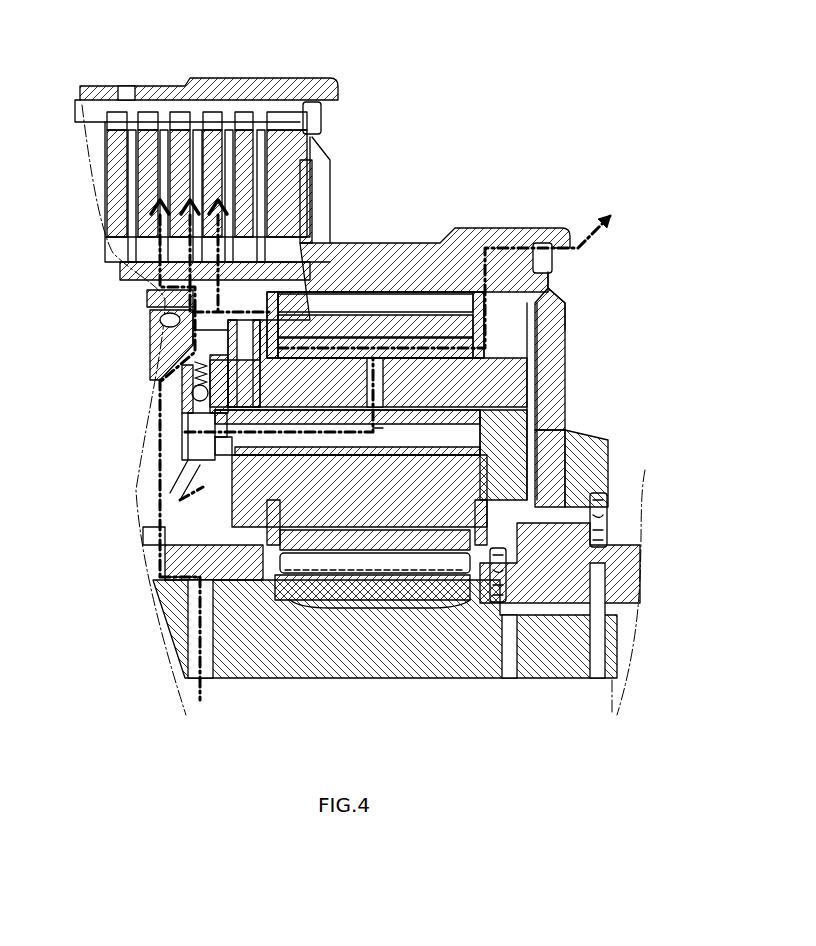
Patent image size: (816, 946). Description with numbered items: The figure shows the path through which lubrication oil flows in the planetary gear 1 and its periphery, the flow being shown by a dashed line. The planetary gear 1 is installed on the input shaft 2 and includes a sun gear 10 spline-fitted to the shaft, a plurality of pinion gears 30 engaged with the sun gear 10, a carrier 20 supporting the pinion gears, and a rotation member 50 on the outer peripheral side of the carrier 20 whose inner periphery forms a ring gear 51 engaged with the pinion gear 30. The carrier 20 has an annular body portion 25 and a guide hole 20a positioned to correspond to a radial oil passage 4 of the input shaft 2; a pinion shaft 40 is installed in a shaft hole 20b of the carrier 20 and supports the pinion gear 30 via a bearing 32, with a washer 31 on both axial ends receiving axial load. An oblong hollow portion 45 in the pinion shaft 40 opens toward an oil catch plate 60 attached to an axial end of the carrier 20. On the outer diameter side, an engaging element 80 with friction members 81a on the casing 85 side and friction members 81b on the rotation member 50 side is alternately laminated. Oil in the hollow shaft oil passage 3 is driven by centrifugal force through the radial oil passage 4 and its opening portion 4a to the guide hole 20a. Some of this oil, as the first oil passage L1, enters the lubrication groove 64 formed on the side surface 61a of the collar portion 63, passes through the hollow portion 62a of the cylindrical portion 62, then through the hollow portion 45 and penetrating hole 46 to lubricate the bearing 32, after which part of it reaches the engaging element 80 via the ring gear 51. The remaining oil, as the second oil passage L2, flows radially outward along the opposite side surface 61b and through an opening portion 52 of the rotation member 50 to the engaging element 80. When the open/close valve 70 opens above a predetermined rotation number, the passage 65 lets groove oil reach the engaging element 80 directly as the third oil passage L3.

The planetary gear 1 is at (580, 198).
The input shaft 2 is at (640, 626).
The shaft oil passage 3 is at (600, 695).
The radial oil passage 4 is at (180, 650).
The opening portion 4a is at (200, 560).
The sun gear 10 is at (260, 590).
The carrier 20 is at (160, 515).
The guide hole 20a is at (165, 545).
The shaft hole 20b is at (550, 368).
The body portion 25 is at (530, 312).
The pinion gear 30 is at (358, 330).
The washer 31 is at (280, 305).
The bearing 32 is at (320, 325).
The pinion shaft 40 is at (540, 395).
The hollow portion 45 is at (548, 428).
The penetrating hole 46 is at (483, 455).
The rotation member 50 is at (418, 243).
The ring gear 51 is at (462, 300).
The opening portion 52 is at (130, 262).
The oil catch plate 60 is at (180, 402).
The side surface 61a is at (217, 333).
The side surface 61b is at (187, 420).
The cylindrical portion 62 is at (320, 432).
The hollow portion 62a is at (197, 452).
The collar portion 63 is at (177, 490).
The lubrication groove 64 is at (182, 467).
The passage 65 is at (200, 353).
The open/close valve 70 is at (188, 373).
The engaging element 80 is at (330, 112).
The friction member 81a is at (185, 130).
The friction member 81b is at (218, 130).
The casing 85 is at (275, 86).
The first oil passage L1 is at (383, 428).
The second oil passage L2 is at (160, 488).
The third oil passage L3 is at (240, 296).